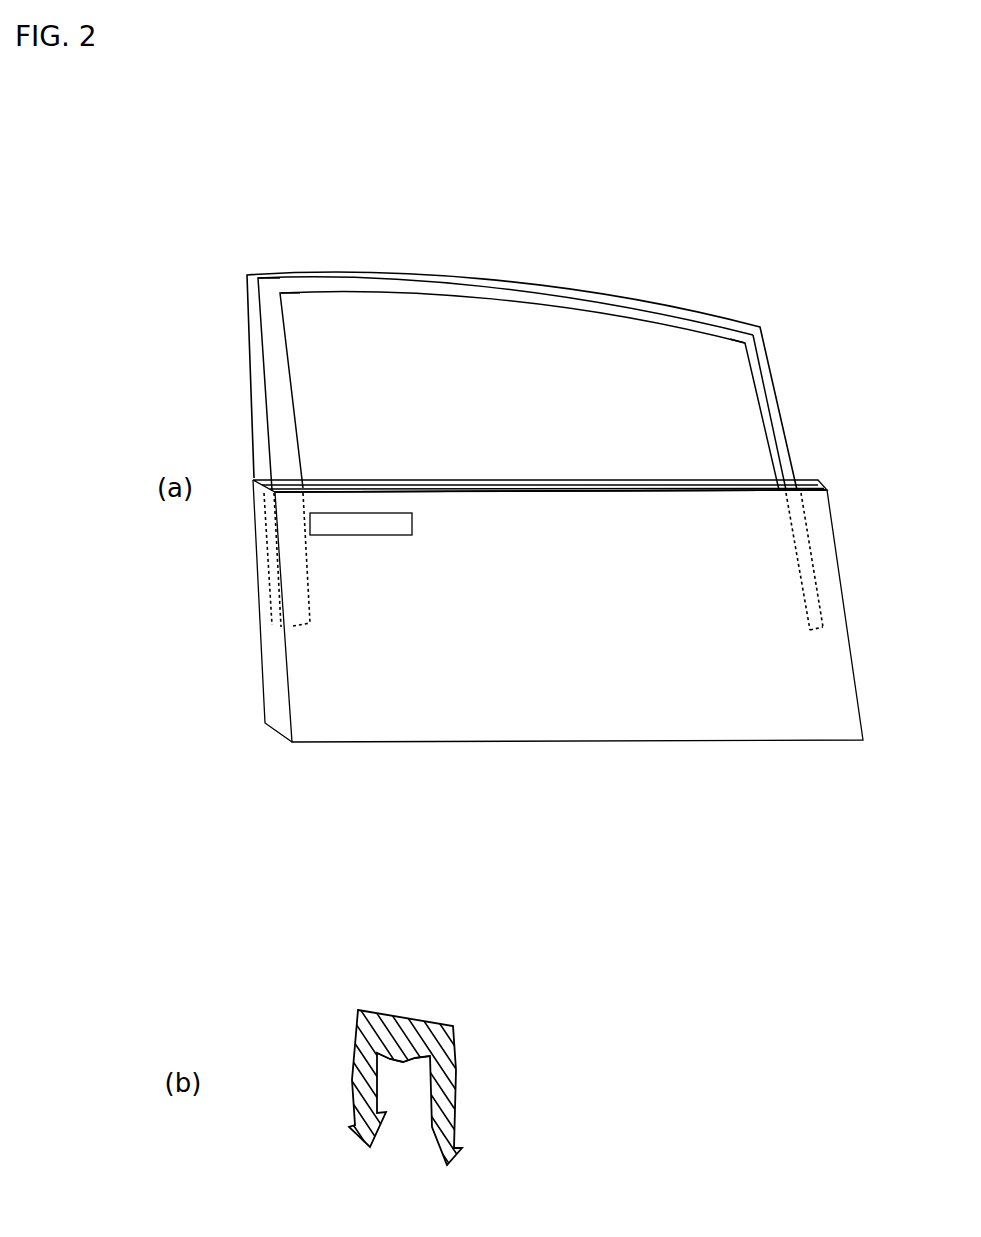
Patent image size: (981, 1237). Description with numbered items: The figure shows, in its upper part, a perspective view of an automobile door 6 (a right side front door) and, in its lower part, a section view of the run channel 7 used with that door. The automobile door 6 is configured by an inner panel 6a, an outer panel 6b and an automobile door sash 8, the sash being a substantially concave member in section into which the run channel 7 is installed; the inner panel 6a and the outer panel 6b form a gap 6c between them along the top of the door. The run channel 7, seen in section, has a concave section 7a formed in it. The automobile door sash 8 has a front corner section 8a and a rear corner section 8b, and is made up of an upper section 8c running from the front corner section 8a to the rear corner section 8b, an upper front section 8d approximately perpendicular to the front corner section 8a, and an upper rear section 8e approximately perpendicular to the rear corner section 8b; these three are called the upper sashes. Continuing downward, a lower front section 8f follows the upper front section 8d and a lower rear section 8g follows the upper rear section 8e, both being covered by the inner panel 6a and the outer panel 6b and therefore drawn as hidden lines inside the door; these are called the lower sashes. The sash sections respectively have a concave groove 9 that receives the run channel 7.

The automobile door 6 is at (697, 292).
The inner panel 6a is at (497, 482).
The outer panel 6b is at (585, 492).
The gap 6c is at (430, 485).
The run channel 7 is at (473, 1025).
The concave section 7a is at (403, 1113).
The automobile door sash 8 is at (533, 280).
The front corner section 8a is at (743, 345).
The rear corner section 8b is at (283, 293).
The upper section 8c is at (452, 287).
The upper front section 8d is at (765, 432).
The upper rear section 8e is at (297, 417).
The lower front section 8f is at (800, 565).
The lower rear section 8g is at (310, 592).
The concave groove 9 is at (378, 292).